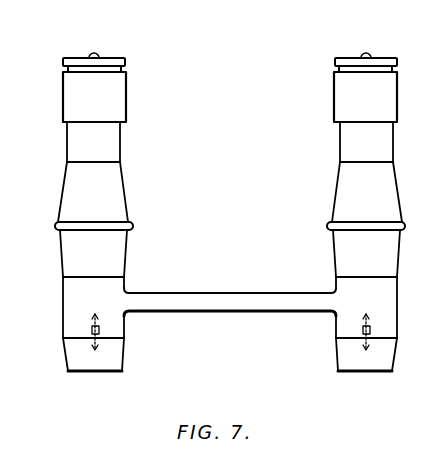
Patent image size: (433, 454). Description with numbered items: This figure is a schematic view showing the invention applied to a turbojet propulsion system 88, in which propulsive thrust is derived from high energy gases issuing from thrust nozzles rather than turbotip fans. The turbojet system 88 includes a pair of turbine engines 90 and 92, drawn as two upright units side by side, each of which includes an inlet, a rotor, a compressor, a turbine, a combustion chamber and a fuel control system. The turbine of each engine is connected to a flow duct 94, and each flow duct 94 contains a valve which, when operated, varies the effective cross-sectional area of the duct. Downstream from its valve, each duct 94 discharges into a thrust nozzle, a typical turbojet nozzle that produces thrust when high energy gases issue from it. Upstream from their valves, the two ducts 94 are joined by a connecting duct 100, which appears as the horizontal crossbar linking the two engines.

The turbojet propulsion system 88 is at (213, 210).
The turbine engine 90 is at (123, 138).
The turbine engine 92 is at (339, 133).
The flow duct 94 is at (78, 291).
The connecting duct 100 is at (238, 309).